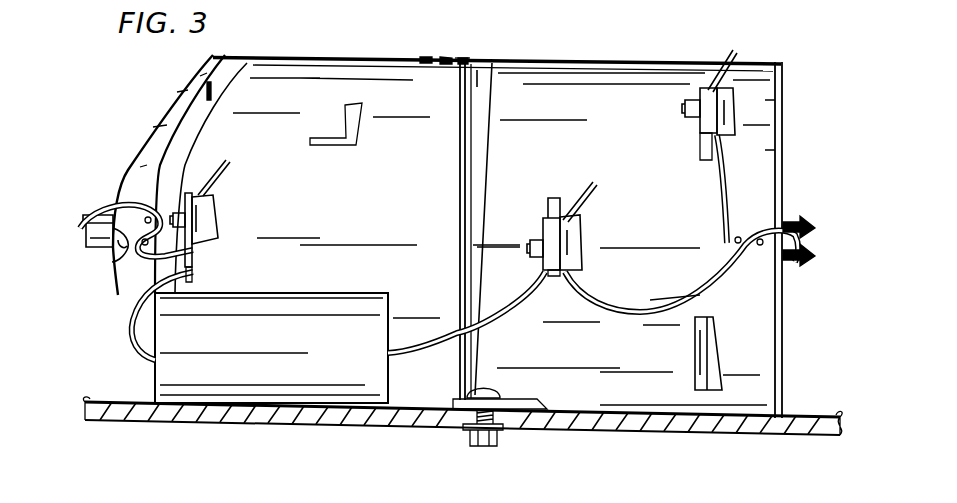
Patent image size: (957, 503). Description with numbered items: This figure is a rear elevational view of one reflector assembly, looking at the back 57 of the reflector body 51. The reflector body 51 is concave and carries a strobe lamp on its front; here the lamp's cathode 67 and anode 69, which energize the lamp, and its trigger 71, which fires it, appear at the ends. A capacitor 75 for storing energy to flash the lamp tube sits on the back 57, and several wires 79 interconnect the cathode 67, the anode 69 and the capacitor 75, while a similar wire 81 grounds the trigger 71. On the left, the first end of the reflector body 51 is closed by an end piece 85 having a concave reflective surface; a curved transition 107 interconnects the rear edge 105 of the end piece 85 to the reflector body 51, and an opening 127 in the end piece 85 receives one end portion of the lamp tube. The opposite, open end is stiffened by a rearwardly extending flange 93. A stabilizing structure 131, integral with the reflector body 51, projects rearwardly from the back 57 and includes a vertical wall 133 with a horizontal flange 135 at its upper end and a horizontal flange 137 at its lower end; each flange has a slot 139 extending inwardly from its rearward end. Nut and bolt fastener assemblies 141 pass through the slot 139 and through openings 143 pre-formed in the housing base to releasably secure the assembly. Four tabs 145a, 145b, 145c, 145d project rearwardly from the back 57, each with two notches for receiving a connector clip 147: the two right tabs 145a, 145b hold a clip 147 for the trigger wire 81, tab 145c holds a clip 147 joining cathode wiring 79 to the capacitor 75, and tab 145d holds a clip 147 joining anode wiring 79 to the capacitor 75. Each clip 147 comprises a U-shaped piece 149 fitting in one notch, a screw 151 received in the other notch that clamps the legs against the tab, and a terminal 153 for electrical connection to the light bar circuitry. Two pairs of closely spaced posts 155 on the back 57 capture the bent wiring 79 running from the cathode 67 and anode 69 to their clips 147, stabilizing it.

The reflector body 51 is at (363, 58).
The back 57 is at (747, 305).
The cathode 67 is at (812, 226).
The anode 69 is at (80, 238).
The trigger 71 is at (675, 278).
The capacitor 75 is at (388, 294).
The wires 79 is at (133, 297).
The wire 81 is at (775, 193).
The end piece 85 is at (178, 98).
The rearwardly extending flange 93 is at (775, 123).
The rear edge 105 is at (153, 151).
The curved transition 107 is at (214, 100).
The opening 127 is at (110, 262).
The stabilizing structure 131 is at (500, 98).
The wall 133 is at (460, 192).
The horizontal flange 135 is at (455, 59).
The horizontal flange 137 is at (547, 403).
The slot 139 is at (447, 63).
The nut and bolt fastener assembly 141 is at (452, 441).
The openings 143 is at (506, 427).
The tab 145a is at (698, 157).
The tab 145b is at (717, 348).
The tab 145c is at (558, 200).
The tab 145d is at (200, 287).
The connector clip 147 is at (222, 236).
The U-shaped piece 149 is at (178, 212).
The screw 151 is at (215, 205).
The terminal 153 is at (229, 163).
The posts 155 is at (128, 198).